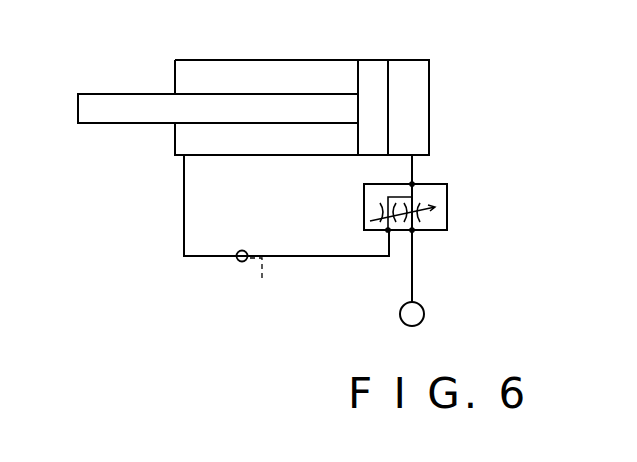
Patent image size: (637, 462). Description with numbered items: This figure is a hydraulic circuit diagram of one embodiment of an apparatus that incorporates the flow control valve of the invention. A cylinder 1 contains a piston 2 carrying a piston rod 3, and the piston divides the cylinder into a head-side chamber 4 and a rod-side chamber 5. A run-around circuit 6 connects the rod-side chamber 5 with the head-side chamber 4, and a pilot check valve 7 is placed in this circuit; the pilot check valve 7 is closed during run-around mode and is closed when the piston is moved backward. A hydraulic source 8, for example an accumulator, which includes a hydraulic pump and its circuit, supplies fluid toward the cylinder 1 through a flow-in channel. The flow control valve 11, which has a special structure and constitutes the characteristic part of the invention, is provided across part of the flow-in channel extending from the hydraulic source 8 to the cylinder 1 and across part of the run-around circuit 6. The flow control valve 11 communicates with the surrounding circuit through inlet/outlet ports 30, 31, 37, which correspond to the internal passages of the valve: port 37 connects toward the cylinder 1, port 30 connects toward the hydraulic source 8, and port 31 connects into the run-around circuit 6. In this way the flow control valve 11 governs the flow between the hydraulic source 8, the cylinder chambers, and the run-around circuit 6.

The cylinder 1 is at (412, 60).
The piston 2 is at (372, 80).
The piston rod 3 is at (124, 92).
The head-side chamber 4 is at (412, 107).
The rod-side chamber 5 is at (237, 80).
The run-around circuit 6 is at (183, 208).
The pilot check valve 7 is at (240, 262).
The hydraulic source 8 is at (424, 314).
The flow control valve 11 is at (447, 210).
The inlet/outlet port 30 is at (412, 232).
The inlet/outlet port 31 is at (389, 232).
The inlet/outlet port 37 is at (412, 184).